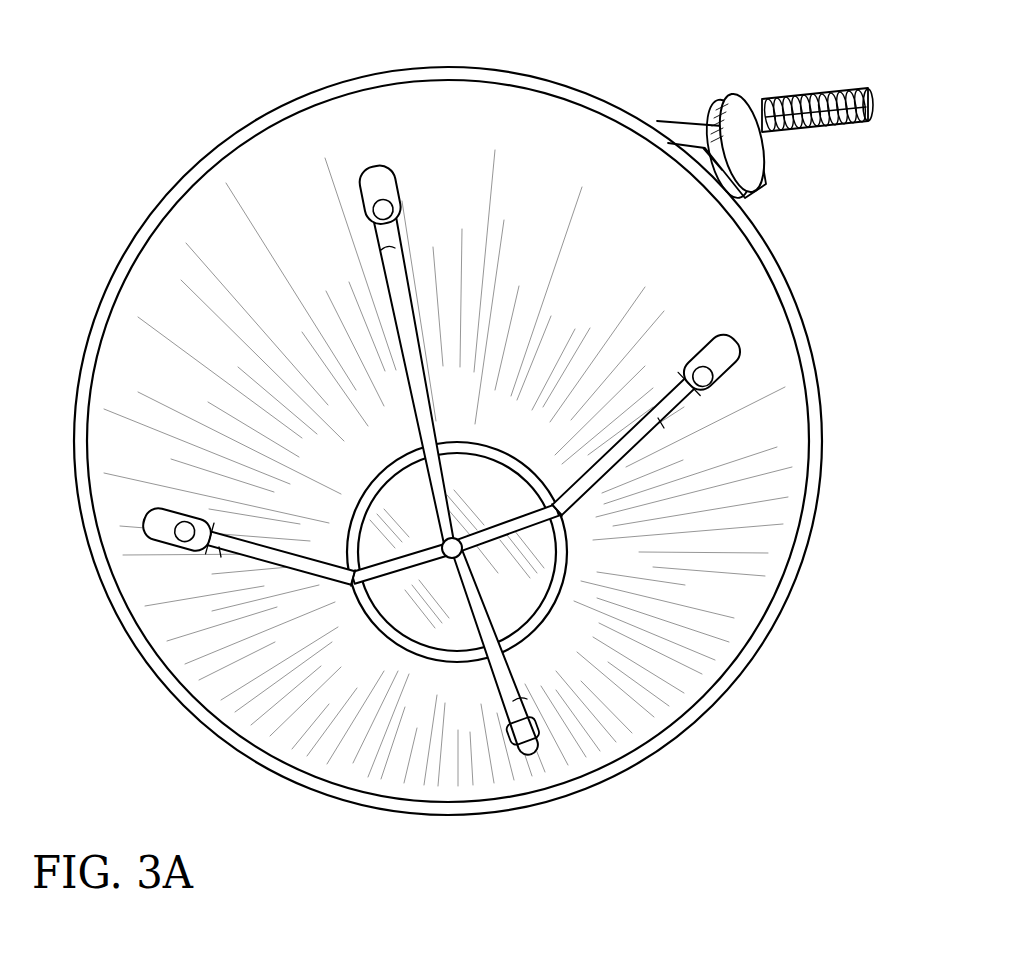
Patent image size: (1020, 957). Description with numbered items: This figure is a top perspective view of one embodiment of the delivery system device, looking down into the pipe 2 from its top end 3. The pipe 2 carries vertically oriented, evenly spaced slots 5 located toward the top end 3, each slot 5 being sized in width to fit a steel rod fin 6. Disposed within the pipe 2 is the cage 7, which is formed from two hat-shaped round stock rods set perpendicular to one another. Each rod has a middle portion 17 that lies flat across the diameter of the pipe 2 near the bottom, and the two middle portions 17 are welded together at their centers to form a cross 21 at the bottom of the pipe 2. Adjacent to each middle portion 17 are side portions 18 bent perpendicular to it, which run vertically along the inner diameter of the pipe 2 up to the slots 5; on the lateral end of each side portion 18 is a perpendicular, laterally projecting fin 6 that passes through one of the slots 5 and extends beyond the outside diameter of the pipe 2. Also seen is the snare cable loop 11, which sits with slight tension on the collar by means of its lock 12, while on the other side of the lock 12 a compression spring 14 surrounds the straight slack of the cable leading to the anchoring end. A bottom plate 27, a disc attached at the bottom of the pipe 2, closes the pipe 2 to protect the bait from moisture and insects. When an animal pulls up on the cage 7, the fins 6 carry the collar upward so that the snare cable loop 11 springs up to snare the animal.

The pipe 2 is at (310, 194).
The top end 3 is at (820, 478).
The slots 5 is at (453, 423).
The fins 6 is at (390, 204).
The cage 7 is at (413, 287).
The snare cable loop 11 is at (672, 125).
The lock 12 is at (760, 160).
The compression spring 14 is at (815, 90).
The middle portion 17 is at (400, 548).
The side portions 18 is at (393, 292).
The cross 21 is at (503, 593).
The bottom plate 27 is at (540, 550).